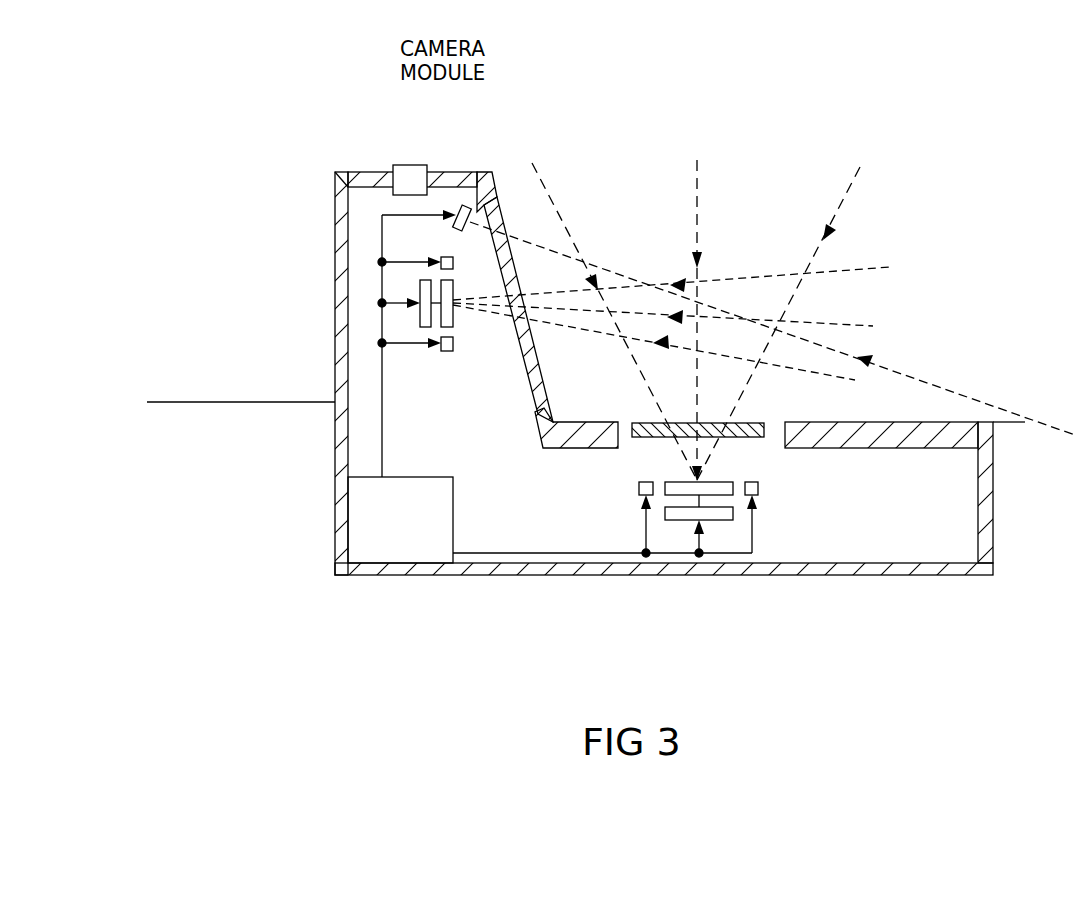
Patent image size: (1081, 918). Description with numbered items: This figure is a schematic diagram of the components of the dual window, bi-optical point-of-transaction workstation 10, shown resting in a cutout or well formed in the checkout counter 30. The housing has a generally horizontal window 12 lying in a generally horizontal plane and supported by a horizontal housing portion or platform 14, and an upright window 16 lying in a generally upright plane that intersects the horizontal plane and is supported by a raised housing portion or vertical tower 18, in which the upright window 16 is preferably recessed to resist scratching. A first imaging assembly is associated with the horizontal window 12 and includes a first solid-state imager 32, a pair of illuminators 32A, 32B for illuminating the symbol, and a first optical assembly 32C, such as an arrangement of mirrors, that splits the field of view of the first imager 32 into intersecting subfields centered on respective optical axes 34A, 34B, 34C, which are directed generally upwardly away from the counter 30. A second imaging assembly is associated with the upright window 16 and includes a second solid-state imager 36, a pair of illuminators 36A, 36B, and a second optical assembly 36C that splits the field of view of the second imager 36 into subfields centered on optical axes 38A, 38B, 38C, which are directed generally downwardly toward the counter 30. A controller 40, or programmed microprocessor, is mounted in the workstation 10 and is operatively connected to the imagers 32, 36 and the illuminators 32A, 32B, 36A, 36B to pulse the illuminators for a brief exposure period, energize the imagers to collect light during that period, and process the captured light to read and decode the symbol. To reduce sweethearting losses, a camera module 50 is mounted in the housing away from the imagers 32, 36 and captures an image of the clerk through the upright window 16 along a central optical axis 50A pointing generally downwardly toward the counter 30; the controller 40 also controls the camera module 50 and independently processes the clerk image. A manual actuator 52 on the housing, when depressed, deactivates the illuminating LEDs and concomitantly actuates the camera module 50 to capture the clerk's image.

The point-of-transaction workstation 10 is at (367, 157).
The horizontal window 12 is at (752, 422).
The platform 14 is at (950, 422).
The upright window 16 is at (546, 378).
The vertical tower 18 is at (487, 172).
The checkout counter 30 is at (1013, 422).
The first imager 32 is at (717, 521).
The illuminator 32A is at (639, 489).
The illuminator 32B is at (758, 489).
The first optical assembly 32C is at (683, 497).
The optical axis 34A is at (703, 180).
The optical axis 34B is at (548, 180).
The optical axis 34C is at (855, 178).
The second imager 36 is at (420, 293).
The illuminator 36A is at (447, 257).
The illuminator 36B is at (447, 351).
The second optical assembly 36C is at (420, 316).
The optical axis 38A is at (843, 326).
The optical axis 38B is at (755, 277).
The optical axis 38C is at (822, 378).
The controller 40 is at (367, 504).
The camera module 50 is at (463, 205).
The central optical axis 50A is at (626, 272).
The manual actuator 52 is at (410, 165).